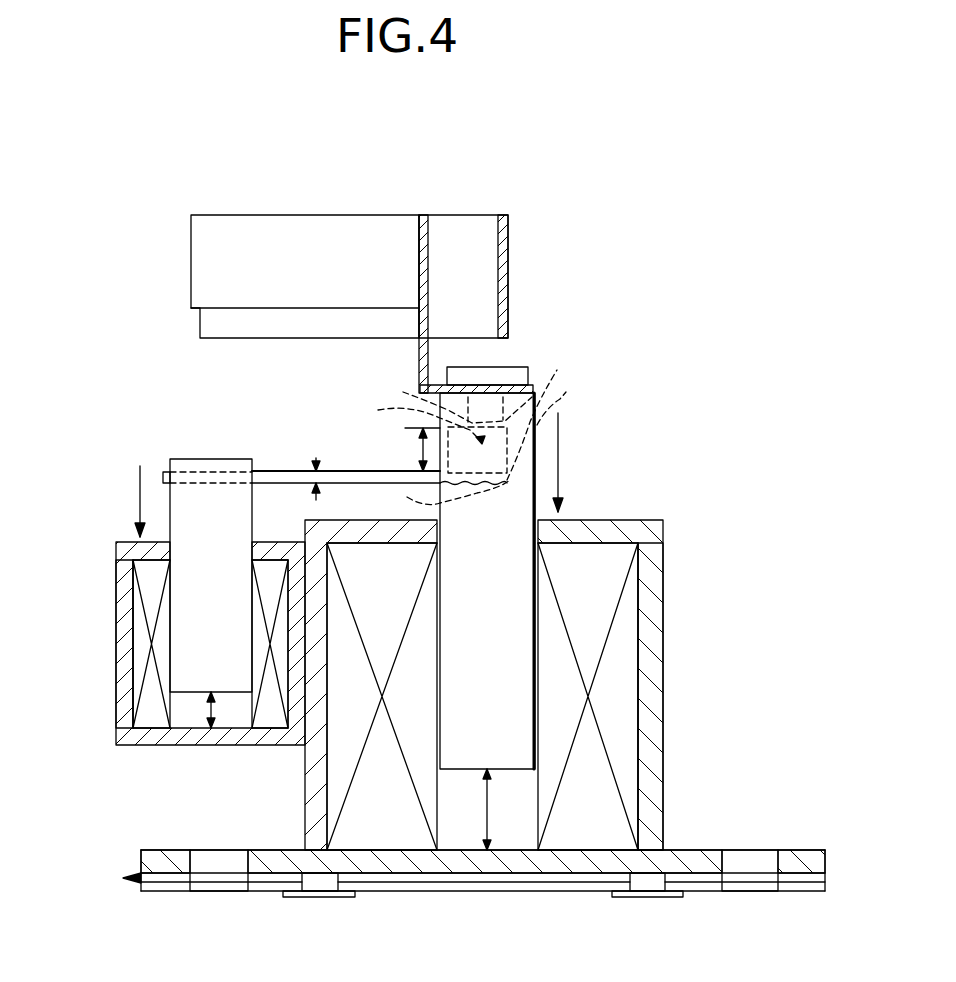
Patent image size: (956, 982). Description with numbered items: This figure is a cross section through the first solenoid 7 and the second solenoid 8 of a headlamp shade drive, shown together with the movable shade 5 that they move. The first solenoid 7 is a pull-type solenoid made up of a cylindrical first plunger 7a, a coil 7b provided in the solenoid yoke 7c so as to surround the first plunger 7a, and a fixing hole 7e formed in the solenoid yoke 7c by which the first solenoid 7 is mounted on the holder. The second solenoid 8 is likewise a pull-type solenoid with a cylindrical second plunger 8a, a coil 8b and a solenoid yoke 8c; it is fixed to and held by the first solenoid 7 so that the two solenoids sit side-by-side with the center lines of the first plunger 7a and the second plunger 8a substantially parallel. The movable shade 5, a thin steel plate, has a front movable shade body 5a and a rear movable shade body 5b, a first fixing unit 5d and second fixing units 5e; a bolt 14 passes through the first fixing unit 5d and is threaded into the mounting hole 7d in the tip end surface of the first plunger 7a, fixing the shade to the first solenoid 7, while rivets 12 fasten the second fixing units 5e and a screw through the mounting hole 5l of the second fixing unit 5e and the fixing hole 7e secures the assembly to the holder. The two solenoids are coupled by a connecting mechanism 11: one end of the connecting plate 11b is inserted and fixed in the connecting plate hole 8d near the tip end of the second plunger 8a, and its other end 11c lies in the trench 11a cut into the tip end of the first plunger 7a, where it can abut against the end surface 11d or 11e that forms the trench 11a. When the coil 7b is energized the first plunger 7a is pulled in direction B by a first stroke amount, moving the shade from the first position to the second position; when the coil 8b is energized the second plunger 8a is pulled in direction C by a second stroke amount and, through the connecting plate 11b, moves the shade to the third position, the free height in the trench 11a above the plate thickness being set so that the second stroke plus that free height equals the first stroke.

The movable shade 5 is at (208, 198).
The front movable shade body 5a is at (212, 252).
The rear movable shade body 5b is at (460, 235).
The first fixing unit 5d is at (426, 358).
The second fixing unit 5e is at (455, 875).
The mounting hole 5l is at (229, 895).
The bolt 14 is at (505, 377).
The first solenoid 7 is at (664, 563).
The first plunger 7a is at (510, 658).
The coil 7b is at (632, 620).
The solenoid yoke 7c is at (650, 773).
The mounting hole 7d is at (543, 374).
The fixing hole 7e is at (219, 860).
The rivet 12 is at (318, 896).
The second solenoid 8 is at (116, 572).
The second plunger 8a is at (181, 457).
The coil 8b is at (140, 628).
The solenoid yoke 8c is at (128, 692).
The connecting plate hole 8d is at (228, 468).
The connecting mechanism 11 is at (338, 469).
The trench 11a is at (446, 428).
The connecting plate 11b is at (276, 468).
The other end of connecting plate 11c is at (574, 405).
The end surface of trench 11d is at (411, 420).
The end surface of trench 11e is at (435, 497).